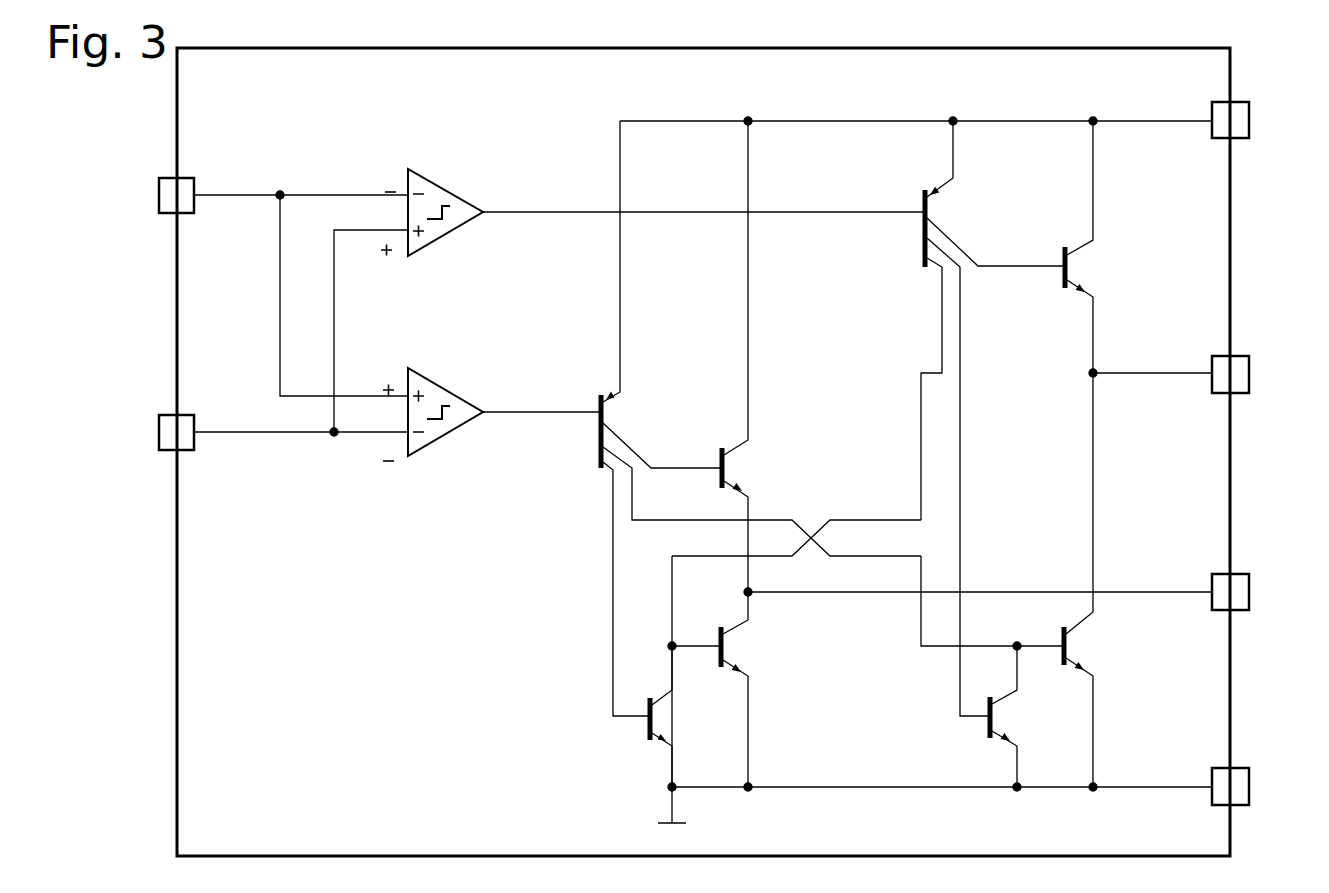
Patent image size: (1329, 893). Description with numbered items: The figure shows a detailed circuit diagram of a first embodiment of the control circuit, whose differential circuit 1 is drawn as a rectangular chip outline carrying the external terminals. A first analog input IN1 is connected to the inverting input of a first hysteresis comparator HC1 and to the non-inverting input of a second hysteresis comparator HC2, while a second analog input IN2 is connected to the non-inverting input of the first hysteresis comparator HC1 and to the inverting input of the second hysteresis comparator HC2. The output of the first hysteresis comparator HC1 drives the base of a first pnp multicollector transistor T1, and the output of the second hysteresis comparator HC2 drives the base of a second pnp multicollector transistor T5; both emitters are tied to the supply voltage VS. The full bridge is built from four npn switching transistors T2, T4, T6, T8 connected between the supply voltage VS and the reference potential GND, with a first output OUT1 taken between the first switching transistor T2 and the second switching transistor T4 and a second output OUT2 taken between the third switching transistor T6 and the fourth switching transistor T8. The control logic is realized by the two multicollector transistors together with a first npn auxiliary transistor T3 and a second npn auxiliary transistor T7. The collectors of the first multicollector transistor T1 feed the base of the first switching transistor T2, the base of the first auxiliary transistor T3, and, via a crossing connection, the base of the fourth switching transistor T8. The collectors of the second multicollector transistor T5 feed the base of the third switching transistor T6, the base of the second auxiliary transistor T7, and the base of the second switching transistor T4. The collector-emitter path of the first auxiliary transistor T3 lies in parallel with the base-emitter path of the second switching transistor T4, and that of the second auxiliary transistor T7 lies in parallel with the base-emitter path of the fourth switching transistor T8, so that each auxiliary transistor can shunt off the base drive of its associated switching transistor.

The differential circuit 1 is at (198, 792).
The first pnp multicollector transistor T1 is at (993, 416).
The first npn switching transistor T2 is at (1088, 364).
The first npn auxiliary transistor T3 is at (1013, 718).
The second npn switching transistor T4 is at (1015, 673).
The second pnp multicollector transistor T5 is at (761, 418).
The third npn switching transistor T6 is at (746, 368).
The second npn auxiliary transistor T7 is at (669, 716).
The fourth npn switching transistor T8 is at (794, 655).
The first hysteresis comparator HC1 is at (632, 197).
The second hysteresis comparator HC2 is at (470, 402).
The first analog input IN1 is at (257, 287).
The second analog input IN2 is at (257, 340).
The first output OUT1 is at (1205, 374).
The second output OUT2 is at (1033, 592).
The supply voltage VS is at (959, 120).
The reference potential GND is at (984, 795).